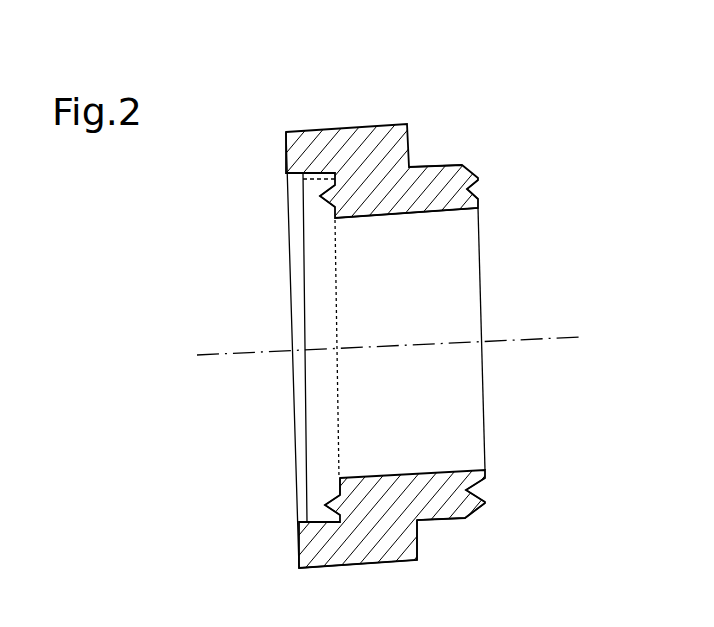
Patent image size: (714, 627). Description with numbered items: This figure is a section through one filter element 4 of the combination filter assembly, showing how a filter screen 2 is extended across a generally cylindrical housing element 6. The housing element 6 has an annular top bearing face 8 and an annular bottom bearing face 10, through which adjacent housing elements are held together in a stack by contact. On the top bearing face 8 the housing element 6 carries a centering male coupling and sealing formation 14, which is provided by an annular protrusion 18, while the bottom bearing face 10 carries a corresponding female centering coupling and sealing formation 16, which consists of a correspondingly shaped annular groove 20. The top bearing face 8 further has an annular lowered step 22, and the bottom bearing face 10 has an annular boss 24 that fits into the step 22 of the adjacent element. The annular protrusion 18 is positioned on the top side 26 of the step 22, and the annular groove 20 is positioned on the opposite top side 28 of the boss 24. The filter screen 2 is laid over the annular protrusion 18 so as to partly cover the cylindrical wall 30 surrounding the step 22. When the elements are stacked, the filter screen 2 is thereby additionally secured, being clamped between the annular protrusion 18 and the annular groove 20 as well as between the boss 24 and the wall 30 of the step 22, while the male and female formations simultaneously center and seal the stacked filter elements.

The filter screen 2 is at (337, 277).
The filter element 4 is at (381, 128).
The housing element 6 is at (307, 155).
The top bearing face 8 is at (298, 547).
The bottom bearing face 10 is at (420, 545).
The centering male coupling and sealing formation 14 is at (308, 190).
The female centering coupling and sealing formation 16 is at (433, 165).
The annular protrusion 18 is at (333, 517).
The annular groove 20 is at (470, 188).
The annular lowered step 22 is at (335, 218).
The annular boss 24 is at (462, 520).
The top side of the step 26 is at (337, 507).
The top side of the boss 28 is at (465, 490).
The cylindrical wall 30 is at (333, 522).